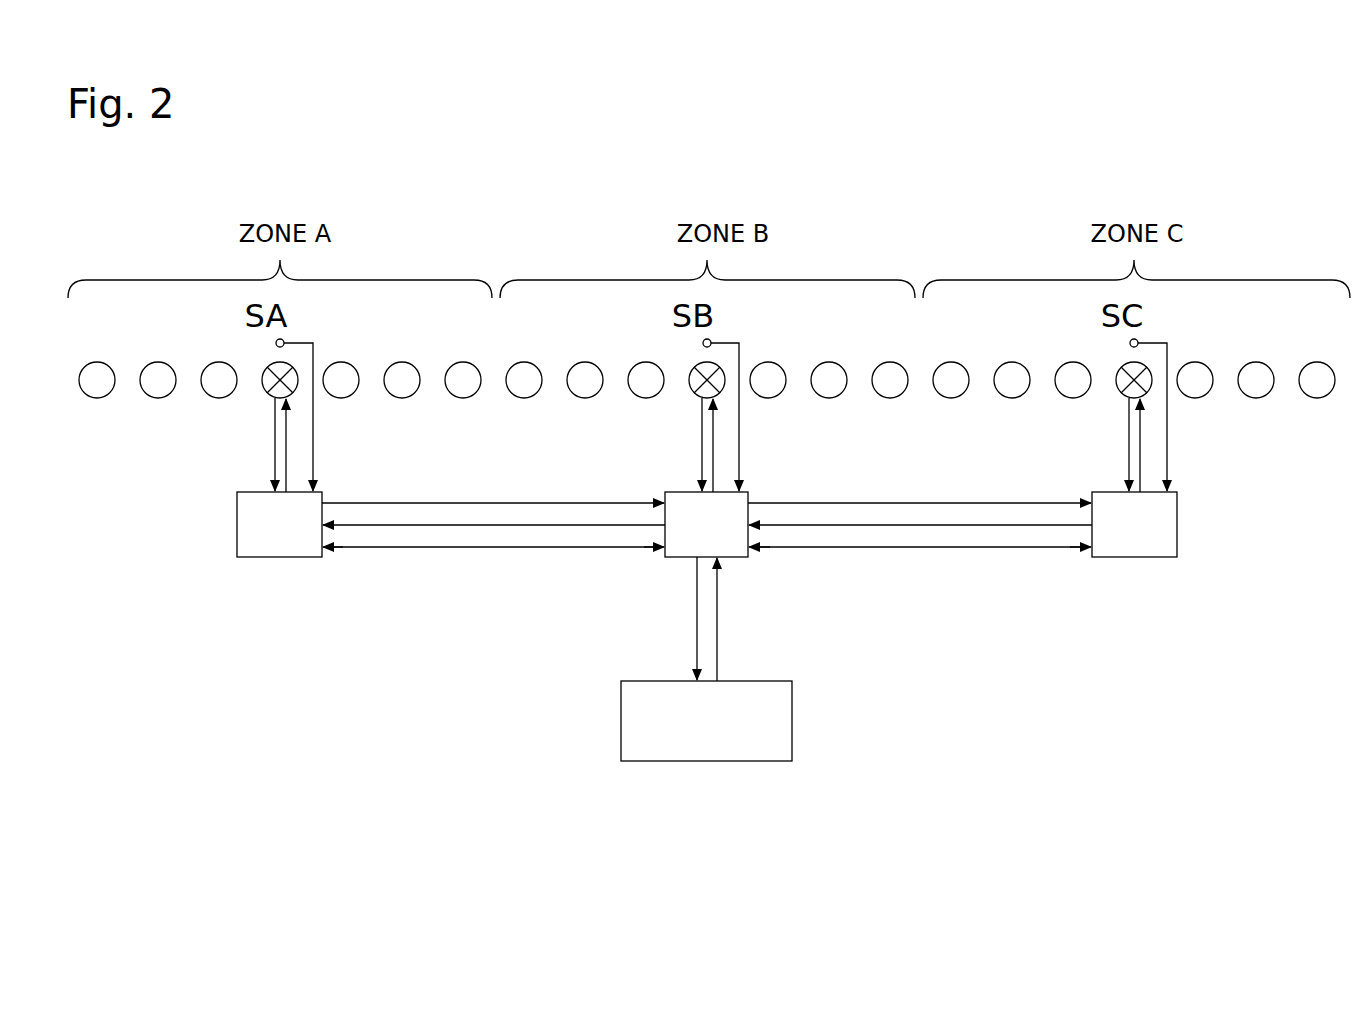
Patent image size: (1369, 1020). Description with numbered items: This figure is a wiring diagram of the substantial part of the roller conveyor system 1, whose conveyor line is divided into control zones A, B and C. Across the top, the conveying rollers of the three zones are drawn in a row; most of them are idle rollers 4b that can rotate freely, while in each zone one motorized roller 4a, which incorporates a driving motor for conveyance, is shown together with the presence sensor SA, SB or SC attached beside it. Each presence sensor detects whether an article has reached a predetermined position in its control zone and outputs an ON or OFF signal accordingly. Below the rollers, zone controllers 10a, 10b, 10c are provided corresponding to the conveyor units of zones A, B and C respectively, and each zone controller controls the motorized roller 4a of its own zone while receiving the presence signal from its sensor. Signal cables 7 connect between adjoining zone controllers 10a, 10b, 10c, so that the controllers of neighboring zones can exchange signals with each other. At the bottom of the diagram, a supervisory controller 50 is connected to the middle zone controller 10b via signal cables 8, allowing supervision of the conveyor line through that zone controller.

The roller conveyor system 1 is at (1181, 161).
The motorized roller 4a is at (268, 393).
The idle roller 4b is at (402, 362).
The signal cable 7 is at (445, 485).
The signal cable 8 is at (675, 628).
The zone controller 10a is at (265, 557).
The zone controller 10b is at (670, 558).
The zone controller 10c is at (1108, 557).
The supervisory controller 50 is at (792, 717).